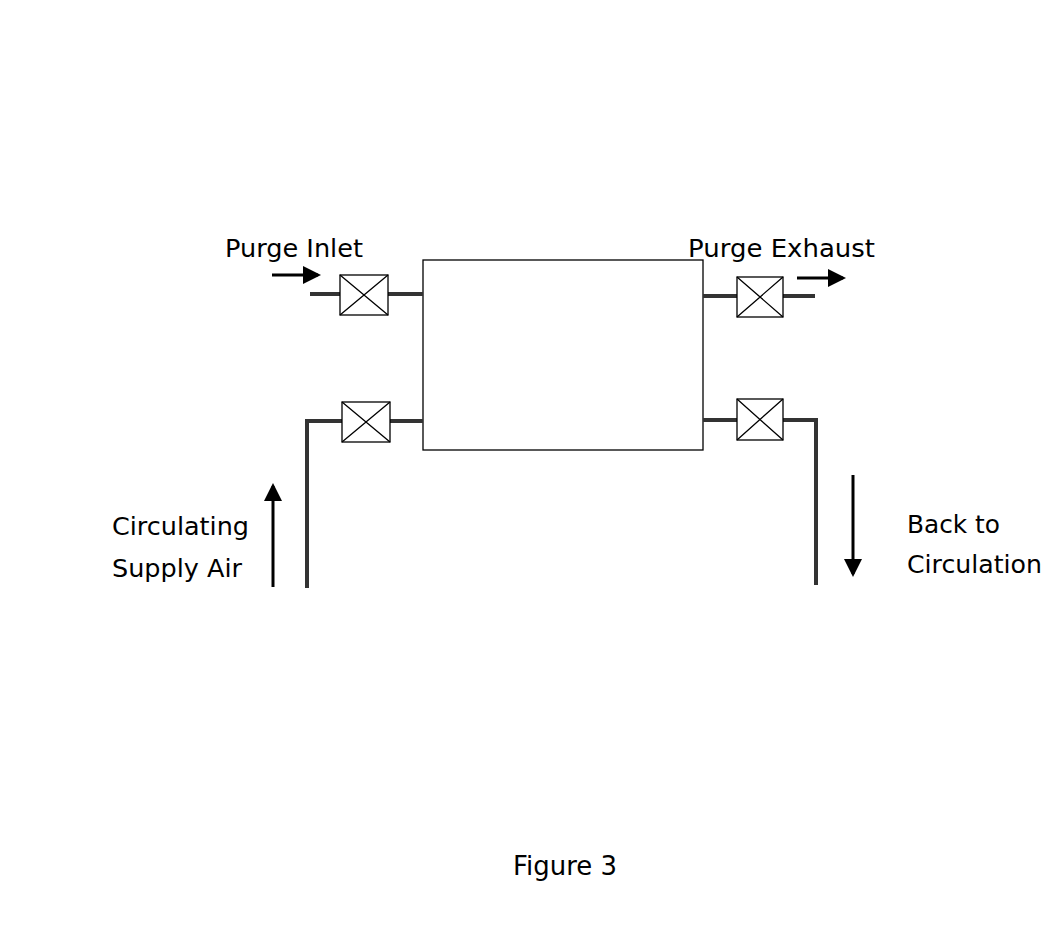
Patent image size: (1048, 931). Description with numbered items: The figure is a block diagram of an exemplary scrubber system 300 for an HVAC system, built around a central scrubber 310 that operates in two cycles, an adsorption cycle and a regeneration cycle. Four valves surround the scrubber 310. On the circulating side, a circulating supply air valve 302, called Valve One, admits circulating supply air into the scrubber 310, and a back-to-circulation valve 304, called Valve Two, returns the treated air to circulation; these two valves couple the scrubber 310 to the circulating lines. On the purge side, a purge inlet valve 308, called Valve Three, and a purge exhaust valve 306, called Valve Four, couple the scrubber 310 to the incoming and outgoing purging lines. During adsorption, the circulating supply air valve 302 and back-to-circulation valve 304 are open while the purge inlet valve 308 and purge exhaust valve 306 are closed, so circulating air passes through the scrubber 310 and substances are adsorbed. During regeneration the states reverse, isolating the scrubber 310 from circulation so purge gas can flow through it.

The scrubber system 300 is at (836, 57).
The circulating supply air valve 302 is at (380, 442).
The back-to-circulation valve 304 is at (783, 400).
The purge exhaust valve 306 is at (783, 316).
The purge inlet valve 308 is at (382, 275).
The scrubber 310 is at (563, 260).